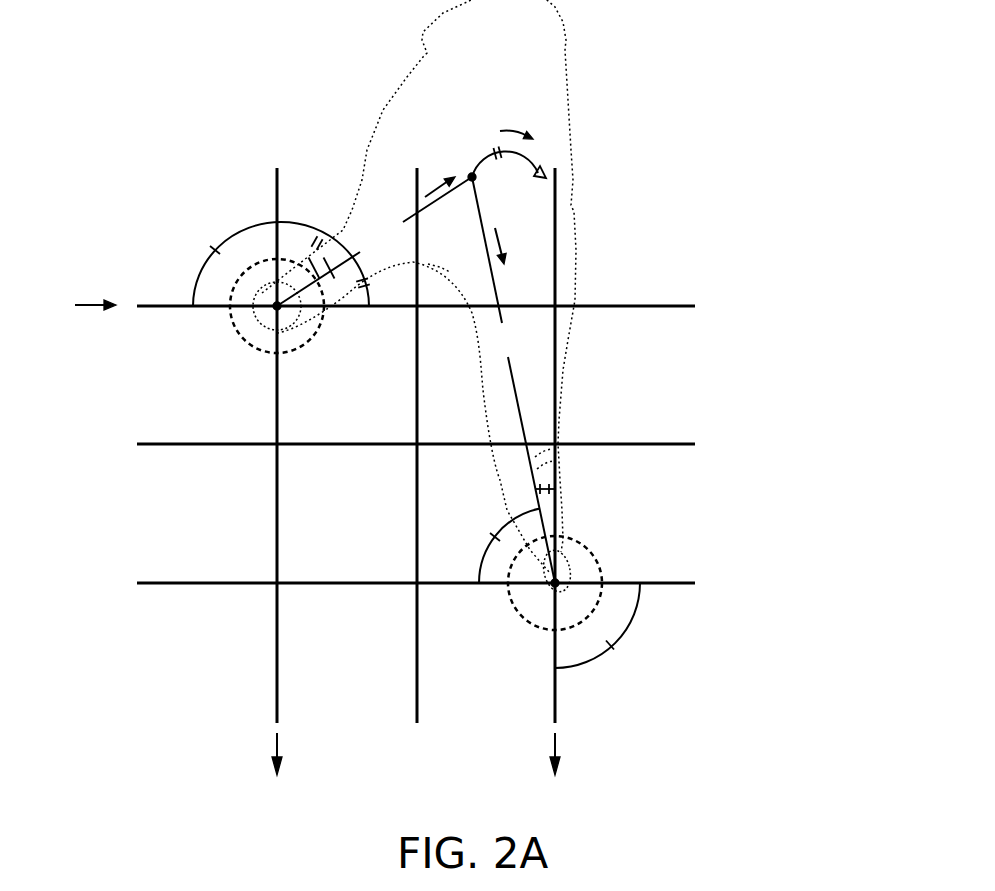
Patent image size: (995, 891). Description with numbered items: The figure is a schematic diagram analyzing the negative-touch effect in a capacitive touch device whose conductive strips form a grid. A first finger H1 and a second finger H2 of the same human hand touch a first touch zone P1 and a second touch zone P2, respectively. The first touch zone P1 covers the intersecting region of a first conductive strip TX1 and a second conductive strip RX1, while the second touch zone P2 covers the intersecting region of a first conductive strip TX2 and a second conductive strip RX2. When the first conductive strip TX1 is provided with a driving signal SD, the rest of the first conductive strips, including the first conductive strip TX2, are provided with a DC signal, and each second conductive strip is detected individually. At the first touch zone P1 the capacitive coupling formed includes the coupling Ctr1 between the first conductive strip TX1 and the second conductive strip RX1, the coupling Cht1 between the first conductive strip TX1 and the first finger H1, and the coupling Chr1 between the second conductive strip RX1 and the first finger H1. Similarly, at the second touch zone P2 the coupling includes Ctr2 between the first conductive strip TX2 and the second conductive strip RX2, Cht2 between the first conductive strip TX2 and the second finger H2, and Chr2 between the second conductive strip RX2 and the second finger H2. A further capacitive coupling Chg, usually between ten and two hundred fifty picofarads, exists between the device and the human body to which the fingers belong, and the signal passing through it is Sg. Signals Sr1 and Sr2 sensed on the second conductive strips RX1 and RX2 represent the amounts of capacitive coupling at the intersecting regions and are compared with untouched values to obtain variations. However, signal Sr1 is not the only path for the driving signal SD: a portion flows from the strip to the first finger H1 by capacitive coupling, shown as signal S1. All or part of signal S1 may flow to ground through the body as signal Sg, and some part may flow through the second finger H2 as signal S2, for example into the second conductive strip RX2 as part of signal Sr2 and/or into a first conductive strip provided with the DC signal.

The second conductive strip RX1 is at (257, 439).
The second conductive strip RX2 is at (574, 440).
The first conductive strip TX1 is at (434, 305).
The first conductive strip TX2 is at (434, 583).
The driving signal SD is at (75, 306).
The first touch zone P1 is at (277, 306).
The second touch zone P2 is at (555, 583).
The first finger H1 is at (376, 239).
The second finger H2 is at (513, 380).
The signal S1 is at (440, 174).
The signal S2 is at (514, 246).
The signal Sg is at (543, 156).
The capacitive coupling Chg is at (497, 149).
The capacitive coupling Ctr1 is at (272, 264).
The capacitive coupling Chr1 is at (320, 245).
The capacitive coupling Cht1 is at (387, 294).
The capacitive coupling Ctr2 is at (600, 633).
The capacitive coupling Chr2 is at (570, 487).
The capacitive coupling Cht2 is at (496, 545).
The signal Sr1 is at (285, 770).
The signal Sr2 is at (563, 770).